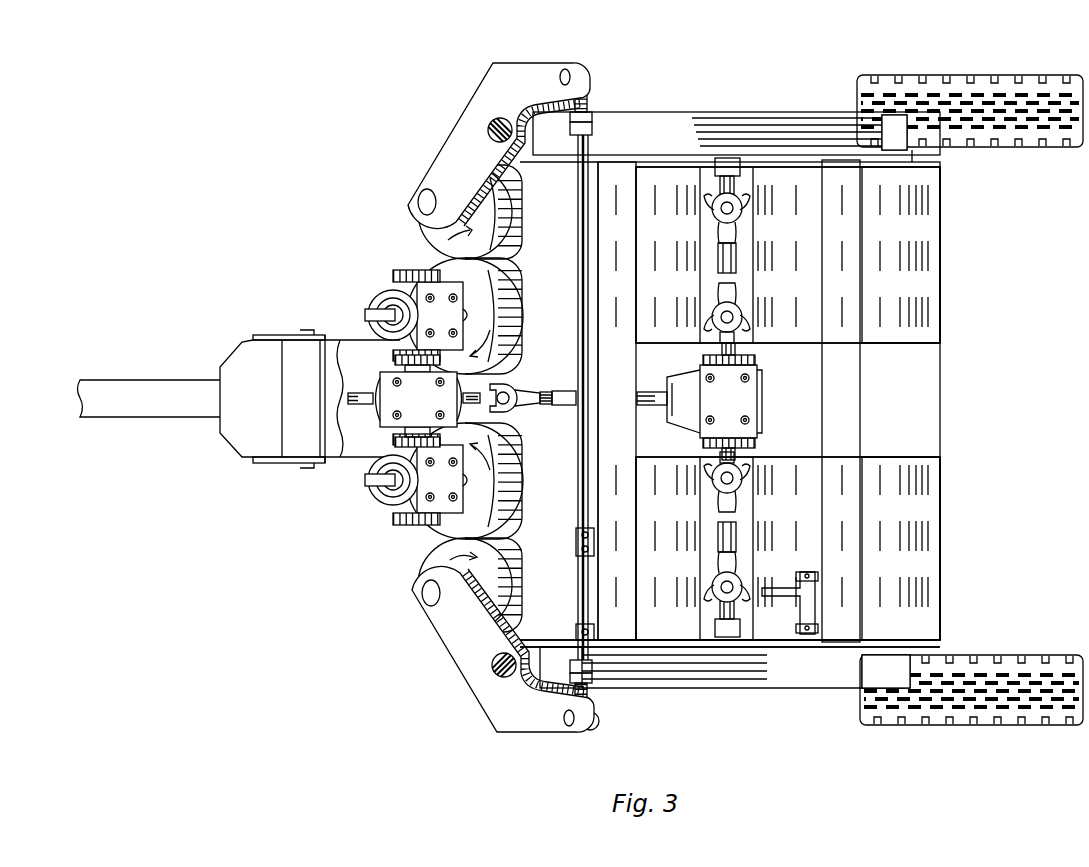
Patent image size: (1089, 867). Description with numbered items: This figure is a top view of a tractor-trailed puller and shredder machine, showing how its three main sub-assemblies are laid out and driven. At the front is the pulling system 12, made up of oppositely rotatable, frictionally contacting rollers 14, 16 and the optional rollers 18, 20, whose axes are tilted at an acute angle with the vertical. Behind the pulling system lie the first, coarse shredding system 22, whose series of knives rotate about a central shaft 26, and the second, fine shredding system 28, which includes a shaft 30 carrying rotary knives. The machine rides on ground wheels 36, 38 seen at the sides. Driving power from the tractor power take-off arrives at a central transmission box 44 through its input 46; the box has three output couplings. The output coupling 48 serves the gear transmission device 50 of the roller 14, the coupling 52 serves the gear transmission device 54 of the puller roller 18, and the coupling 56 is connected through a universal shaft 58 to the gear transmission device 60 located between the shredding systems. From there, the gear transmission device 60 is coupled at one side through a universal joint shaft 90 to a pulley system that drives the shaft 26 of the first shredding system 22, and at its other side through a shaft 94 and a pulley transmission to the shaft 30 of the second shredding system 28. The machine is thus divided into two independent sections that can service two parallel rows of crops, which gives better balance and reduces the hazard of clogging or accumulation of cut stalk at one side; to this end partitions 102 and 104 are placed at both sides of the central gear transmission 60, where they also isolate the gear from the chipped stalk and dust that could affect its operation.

The pulling system 12 is at (437, 697).
The roller 14 is at (446, 529).
The roller 16 is at (438, 552).
The roller 18 is at (452, 271).
The roller 20 is at (438, 242).
The first, coarse shredding system 22 is at (632, 697).
The central shaft 26 is at (640, 586).
The second, fine shredding system 28 is at (822, 697).
The shaft 30 is at (856, 419).
The ground wheel 36 is at (904, 724).
The ground wheel 38 is at (914, 78).
The central transmission box 44 is at (380, 413).
The input 46 is at (372, 393).
The output coupling 48 is at (400, 438).
The gear transmission device 50 is at (382, 506).
The coupling 52 is at (400, 366).
The gear transmission device 54 is at (392, 293).
The coupling 56 is at (476, 408).
The universal shaft 58 is at (574, 392).
The gear transmission device 60 is at (702, 364).
The universal joint shaft 90 is at (734, 536).
The shaft 94 is at (734, 255).
The partition 102 is at (878, 457).
The partition 104 is at (876, 344).